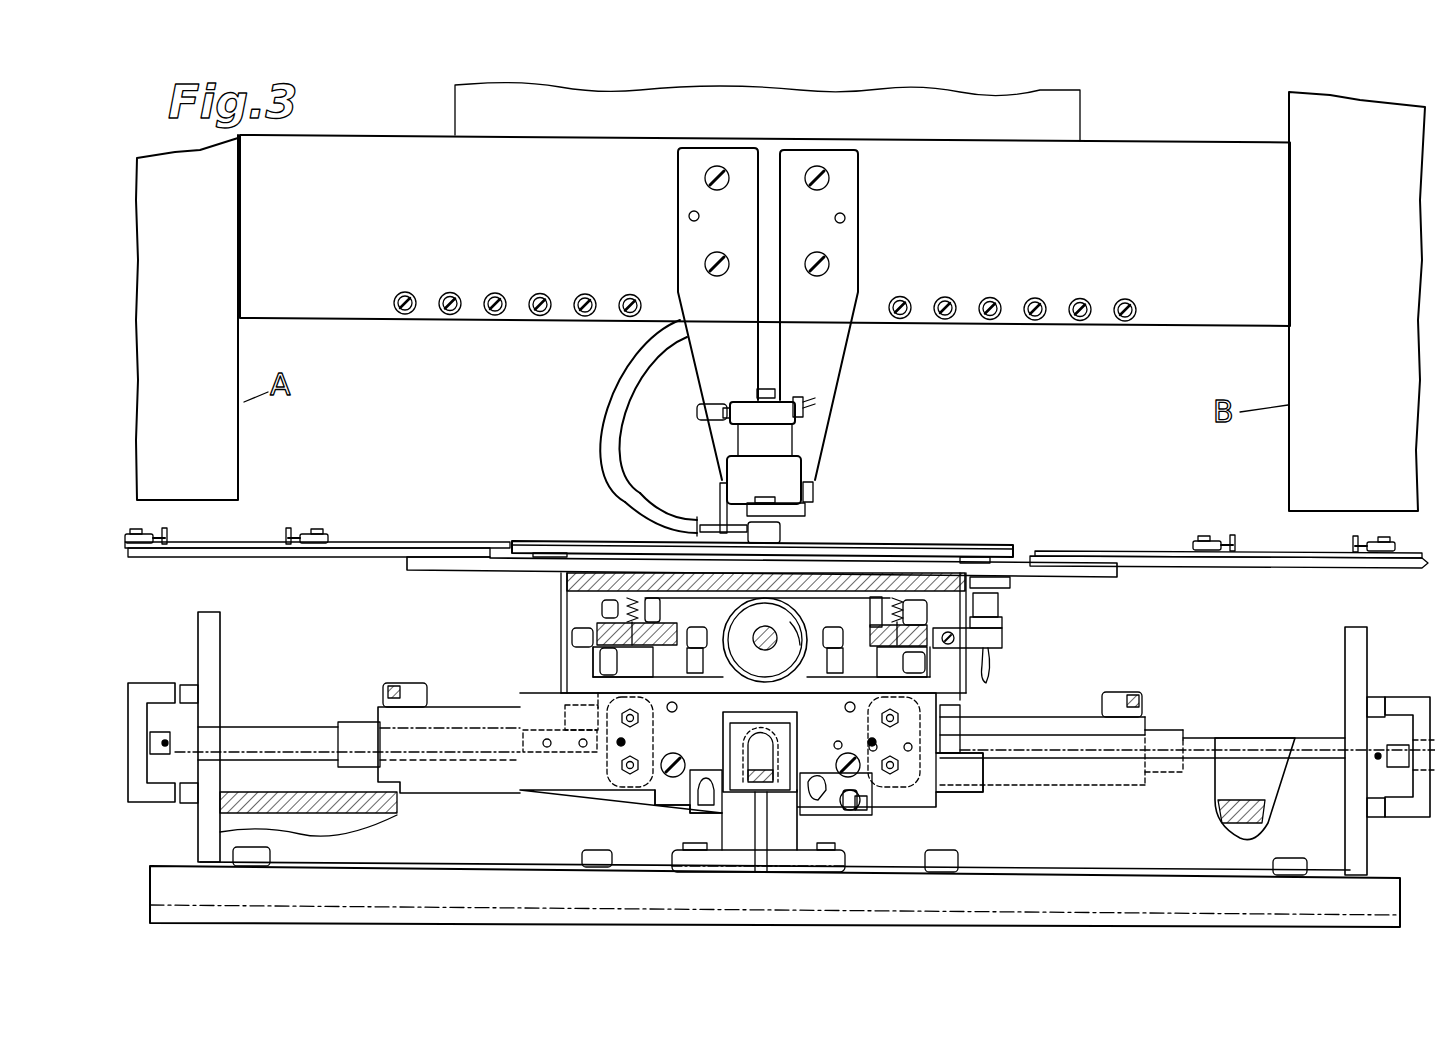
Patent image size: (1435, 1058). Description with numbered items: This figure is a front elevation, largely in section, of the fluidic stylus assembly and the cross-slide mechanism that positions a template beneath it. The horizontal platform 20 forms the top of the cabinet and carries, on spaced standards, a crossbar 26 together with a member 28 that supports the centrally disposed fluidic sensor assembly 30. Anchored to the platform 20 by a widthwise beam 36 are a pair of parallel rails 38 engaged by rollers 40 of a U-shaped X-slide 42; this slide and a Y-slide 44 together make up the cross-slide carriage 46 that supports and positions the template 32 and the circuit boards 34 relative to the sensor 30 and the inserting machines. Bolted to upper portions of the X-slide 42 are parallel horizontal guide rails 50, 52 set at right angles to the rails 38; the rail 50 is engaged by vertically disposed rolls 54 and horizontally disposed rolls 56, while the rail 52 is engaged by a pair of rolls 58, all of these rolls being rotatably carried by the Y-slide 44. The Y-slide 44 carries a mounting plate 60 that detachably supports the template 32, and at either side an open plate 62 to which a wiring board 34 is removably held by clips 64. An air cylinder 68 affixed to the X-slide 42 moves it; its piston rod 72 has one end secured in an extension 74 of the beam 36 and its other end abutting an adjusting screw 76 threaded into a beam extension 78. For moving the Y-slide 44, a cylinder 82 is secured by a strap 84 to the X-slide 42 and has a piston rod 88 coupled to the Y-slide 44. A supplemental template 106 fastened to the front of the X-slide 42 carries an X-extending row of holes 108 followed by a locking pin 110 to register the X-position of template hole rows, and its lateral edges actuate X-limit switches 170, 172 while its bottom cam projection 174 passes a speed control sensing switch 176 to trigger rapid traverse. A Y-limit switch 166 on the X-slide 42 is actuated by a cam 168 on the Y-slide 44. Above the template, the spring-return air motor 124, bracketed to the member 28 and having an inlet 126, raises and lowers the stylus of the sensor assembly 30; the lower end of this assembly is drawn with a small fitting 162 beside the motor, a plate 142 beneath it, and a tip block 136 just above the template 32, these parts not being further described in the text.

The horizontal platform 20 is at (420, 880).
The crossbar 26 is at (1050, 323).
The member 28 is at (859, 262).
The fluidic sensor assembly 30 is at (765, 434).
The template 32 is at (985, 546).
The circuit board 34 is at (244, 541).
The beam 36 is at (561, 863).
The rails 38 is at (459, 728).
The rollers 40 is at (641, 722).
The X-slide 42 is at (836, 681).
The Y-slide 44 is at (566, 585).
The cross-slide carriage 46 is at (400, 601).
The guide rail 50 is at (657, 626).
The guide rail 52 is at (868, 633).
The vertically disposed rolls 54 is at (600, 613).
The horizontally disposed rolls 56 is at (684, 650).
The rolls 58 is at (901, 650).
The mounting plate 60 is at (1100, 577).
The open plate 62 is at (466, 546).
The clips 64 is at (151, 530).
The air cylinder 68 is at (1148, 719).
The piston rod 72 is at (1247, 745).
The extension 74 is at (180, 688).
The screw 76 is at (1428, 785).
The beam extension 78 is at (1373, 697).
The cylinder 82 is at (753, 617).
The strap 84 is at (793, 630).
The piston rod 88 is at (769, 653).
The supplemental template 106 is at (945, 793).
The holes 108 is at (582, 748).
The locking pin 110 is at (797, 721).
The spring-return air motor 124 is at (796, 440).
The inlet 126 is at (718, 404).
The tip block 136 is at (781, 535).
The plate 142 is at (806, 510).
The bracket 162 is at (785, 397).
The Y-limit switch 166 is at (1003, 622).
The cam 168 is at (1012, 585).
The X-limit switch 170 is at (703, 775).
The X-limit switch 172 is at (838, 797).
The bottom cam projection 174 is at (665, 808).
The speed control sensing switch 176 is at (863, 810).